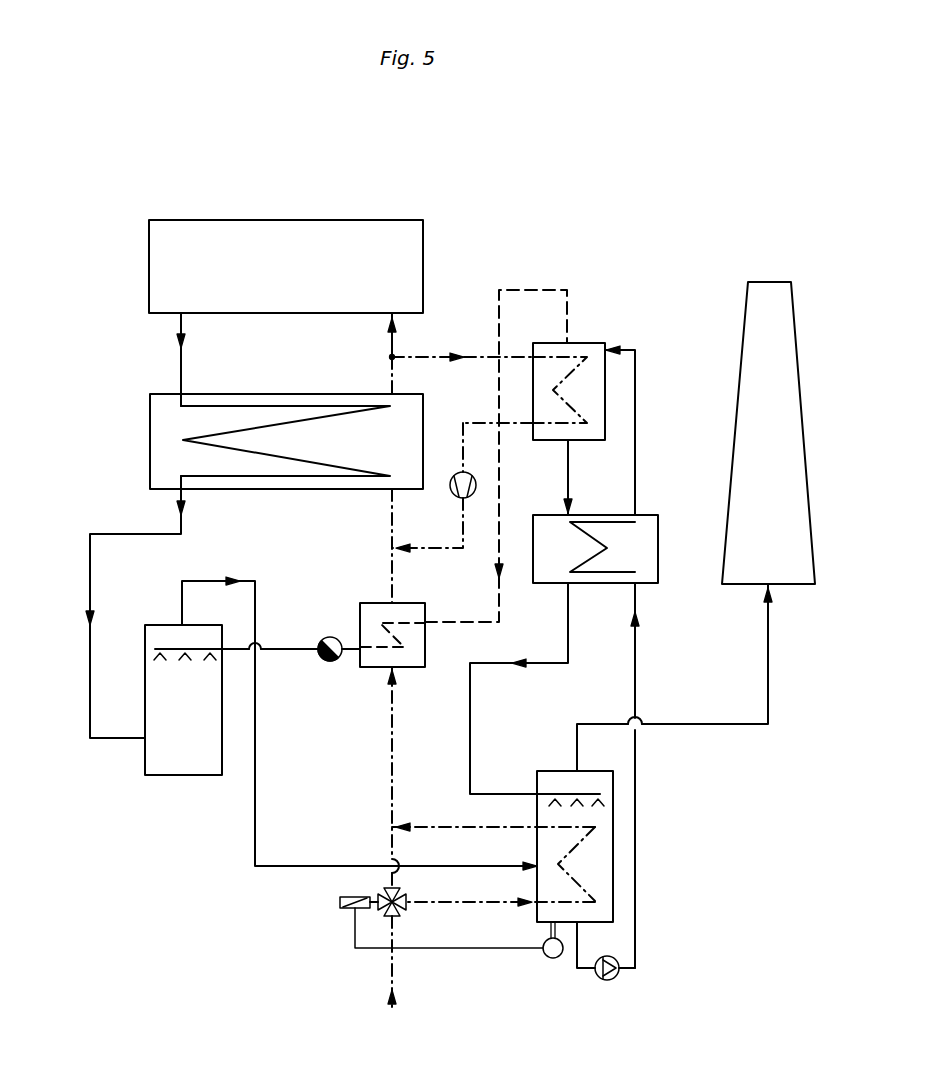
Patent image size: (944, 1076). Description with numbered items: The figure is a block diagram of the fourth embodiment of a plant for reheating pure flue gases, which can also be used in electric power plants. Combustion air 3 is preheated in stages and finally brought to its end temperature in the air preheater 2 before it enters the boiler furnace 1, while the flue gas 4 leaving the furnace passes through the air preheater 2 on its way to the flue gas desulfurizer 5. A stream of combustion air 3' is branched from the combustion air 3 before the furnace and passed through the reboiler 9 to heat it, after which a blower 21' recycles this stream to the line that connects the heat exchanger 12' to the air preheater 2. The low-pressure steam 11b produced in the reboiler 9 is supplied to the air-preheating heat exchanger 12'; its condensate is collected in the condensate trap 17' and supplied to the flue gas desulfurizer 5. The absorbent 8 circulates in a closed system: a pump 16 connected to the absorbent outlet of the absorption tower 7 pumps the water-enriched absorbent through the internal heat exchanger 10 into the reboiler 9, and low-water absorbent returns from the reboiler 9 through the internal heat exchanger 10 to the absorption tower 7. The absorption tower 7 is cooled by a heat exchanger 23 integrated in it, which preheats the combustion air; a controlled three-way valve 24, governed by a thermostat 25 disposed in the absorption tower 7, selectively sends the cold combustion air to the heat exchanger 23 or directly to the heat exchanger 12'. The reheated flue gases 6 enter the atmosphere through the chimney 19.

The boiler furnace 1 is at (268, 238).
The air preheater 2 is at (163, 434).
The combustion air 3 is at (411, 458).
The stream of combustion air 3' is at (462, 341).
The feed line 4 is at (181, 351).
The flue gas desulfurizer 5 is at (153, 633).
The reheated flue gases 6 is at (250, 820).
The absorption tower 7 is at (558, 780).
The absorbent 8 is at (635, 440).
The reboiler 9 is at (582, 348).
The internal heat exchanger 10 is at (590, 522).
The partial stream of low-pressure steam 11b is at (513, 289).
The air-preheating heat exchanger 12' is at (421, 622).
The pump 16 is at (598, 977).
The condensate trap 17' is at (304, 620).
The chimney 19 is at (748, 392).
The blower 21' is at (462, 487).
The heat exchanger 23 is at (563, 877).
The controlled three-way valve 24 is at (404, 906).
The thermostat 25 is at (547, 955).